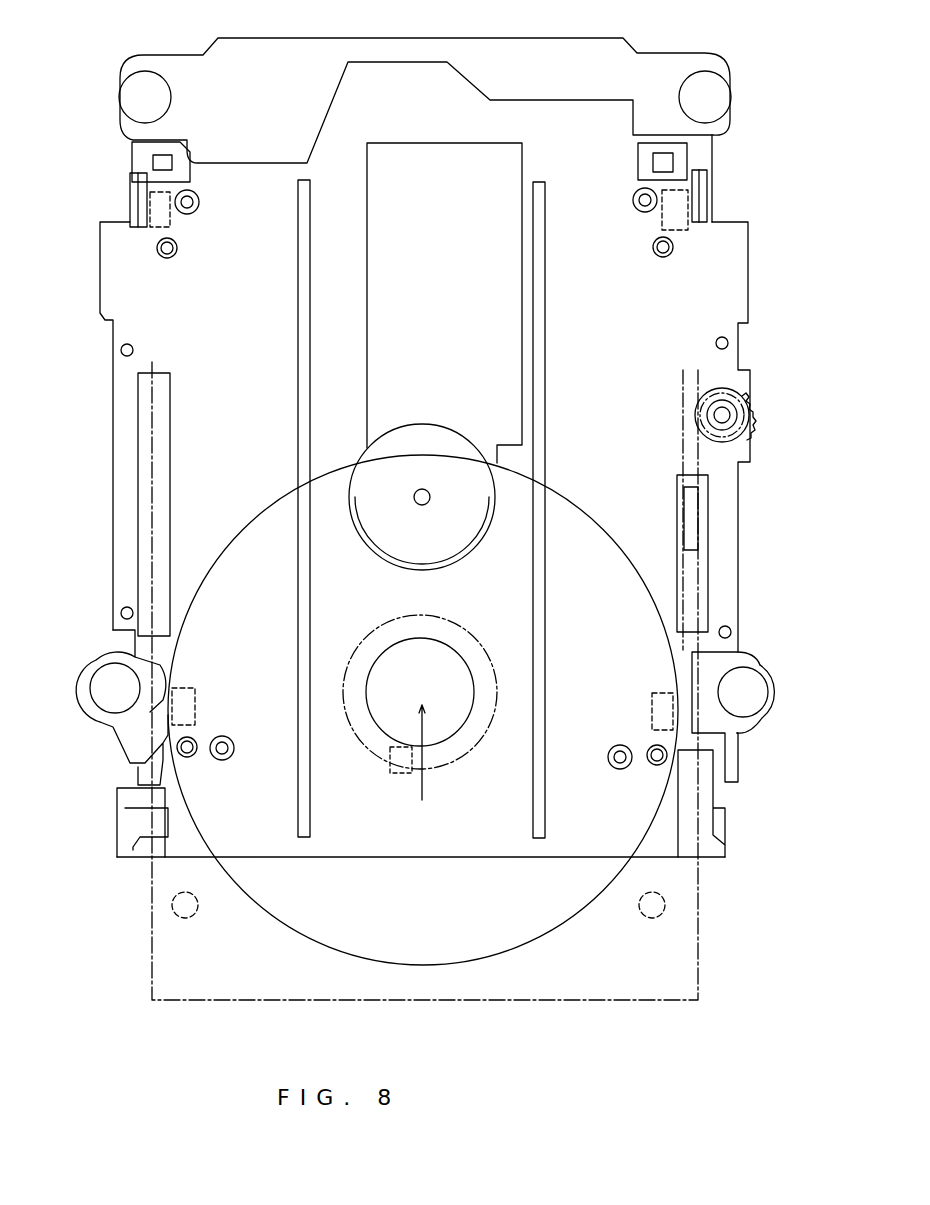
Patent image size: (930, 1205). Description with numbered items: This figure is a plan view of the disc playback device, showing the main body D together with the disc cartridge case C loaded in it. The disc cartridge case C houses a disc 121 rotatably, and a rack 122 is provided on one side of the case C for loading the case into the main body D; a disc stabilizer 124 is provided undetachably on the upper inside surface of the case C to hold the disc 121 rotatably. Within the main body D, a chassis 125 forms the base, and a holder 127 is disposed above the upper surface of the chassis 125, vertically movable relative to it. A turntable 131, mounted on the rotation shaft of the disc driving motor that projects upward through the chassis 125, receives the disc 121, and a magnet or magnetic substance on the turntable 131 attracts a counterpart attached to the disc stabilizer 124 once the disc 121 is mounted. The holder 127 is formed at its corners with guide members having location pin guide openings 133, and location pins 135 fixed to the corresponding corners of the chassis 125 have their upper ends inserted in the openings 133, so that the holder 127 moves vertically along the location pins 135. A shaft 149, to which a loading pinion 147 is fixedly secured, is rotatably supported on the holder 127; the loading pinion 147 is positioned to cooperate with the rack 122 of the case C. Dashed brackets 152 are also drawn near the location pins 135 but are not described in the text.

The disc 121 is at (490, 957).
The rack 122 is at (688, 493).
The disc stabilizer 124 is at (463, 640).
The chassis 125 is at (572, 37).
The holder 127 is at (748, 290).
The turntable 131 is at (455, 452).
The location pin guide openings 133 is at (168, 258).
The location pins 135 is at (178, 248).
The loading pinion 147 is at (749, 420).
The shaft 149 is at (723, 415).
The bracket 152 is at (172, 222).
The disc cartridge case C is at (150, 948).
The main body D is at (88, 229).